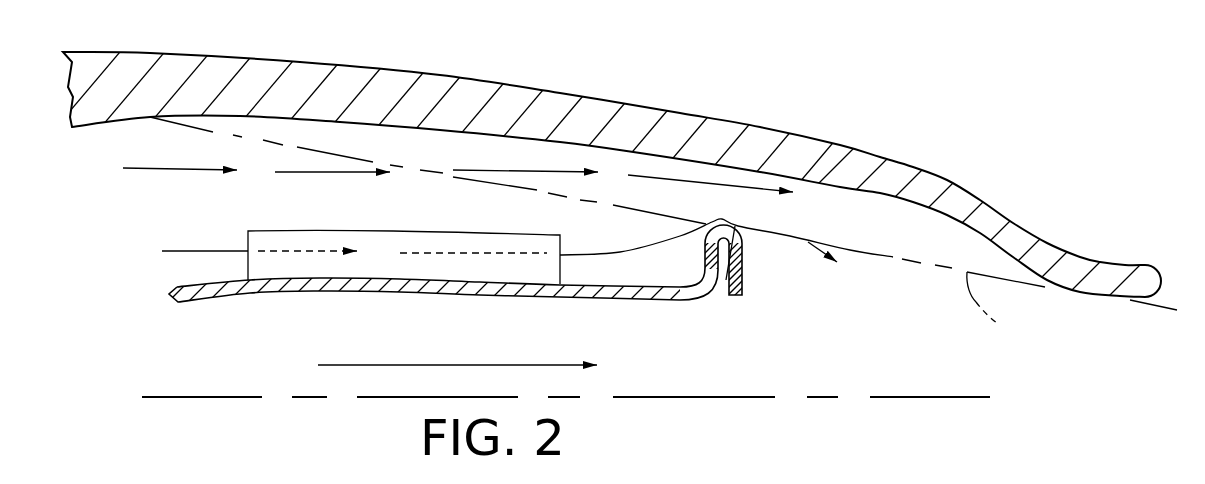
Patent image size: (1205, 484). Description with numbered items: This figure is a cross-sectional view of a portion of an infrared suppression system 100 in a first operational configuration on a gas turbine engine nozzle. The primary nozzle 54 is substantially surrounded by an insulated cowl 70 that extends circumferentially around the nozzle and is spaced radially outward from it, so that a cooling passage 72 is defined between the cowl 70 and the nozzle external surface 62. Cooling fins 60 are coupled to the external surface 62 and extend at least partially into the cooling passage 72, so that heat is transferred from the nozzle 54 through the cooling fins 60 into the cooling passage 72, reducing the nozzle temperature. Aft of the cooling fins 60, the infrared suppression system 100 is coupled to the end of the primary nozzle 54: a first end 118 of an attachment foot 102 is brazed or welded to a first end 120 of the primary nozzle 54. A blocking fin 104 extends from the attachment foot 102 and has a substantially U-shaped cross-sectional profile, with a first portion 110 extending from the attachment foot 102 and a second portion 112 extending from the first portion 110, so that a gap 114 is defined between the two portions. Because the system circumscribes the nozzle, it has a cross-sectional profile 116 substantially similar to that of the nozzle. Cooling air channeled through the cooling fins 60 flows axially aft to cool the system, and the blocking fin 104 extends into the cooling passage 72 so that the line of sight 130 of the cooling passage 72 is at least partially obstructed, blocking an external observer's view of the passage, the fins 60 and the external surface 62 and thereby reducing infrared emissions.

The primary nozzle 54 is at (513, 298).
The cooling fins 60 is at (393, 271).
The nozzle external surface 62 is at (207, 285).
The insulated cowl 70 is at (563, 93).
The cooling passage 72 is at (440, 210).
The infrared suppression system 100 is at (736, 308).
The attachment foot 102 is at (688, 301).
The blocking fin 104 is at (752, 230).
The first portion 110 is at (706, 259).
The second portion 112 is at (743, 260).
The gap 114 is at (735, 226).
The cross-sectional profile 116 is at (762, 285).
The first end of attachment foot 118 is at (685, 286).
The first end of primary nozzle 120 is at (663, 302).
The line of sight 130 is at (997, 323).